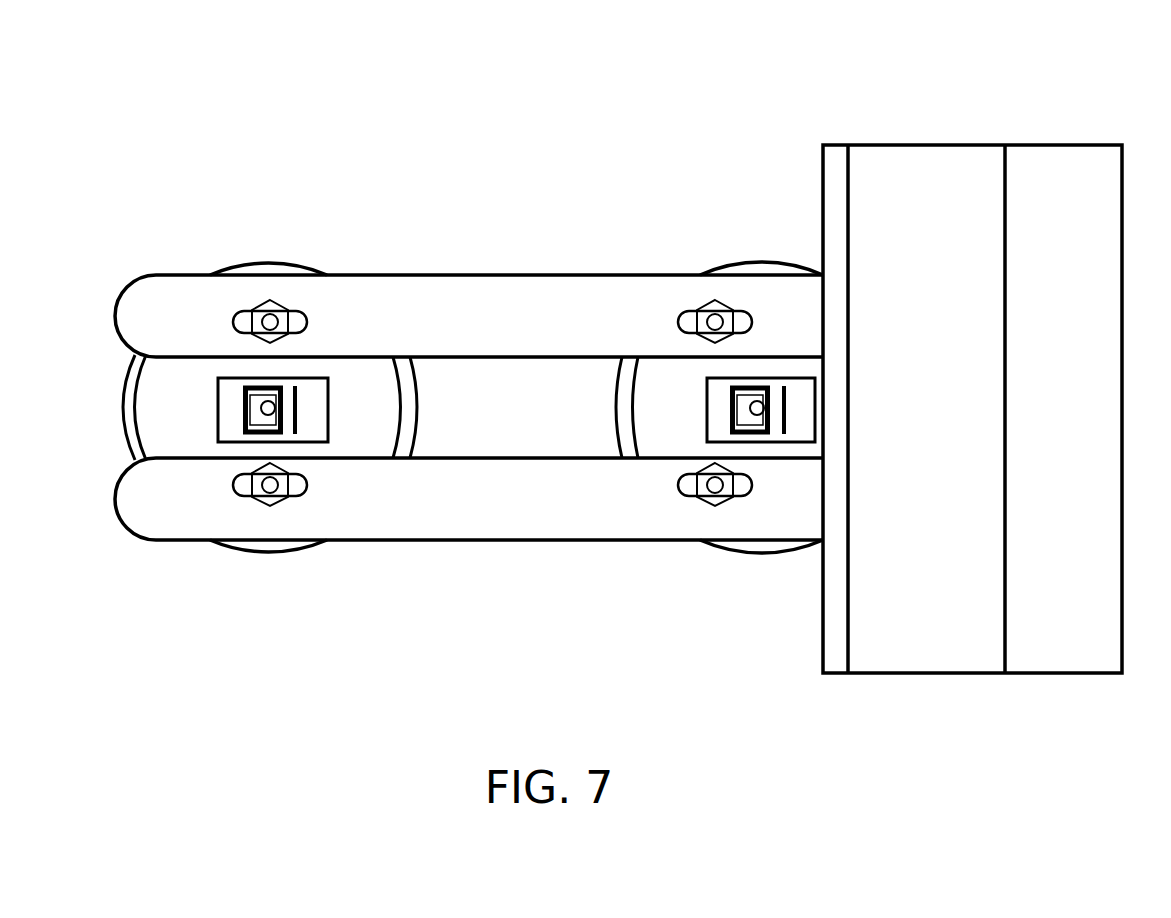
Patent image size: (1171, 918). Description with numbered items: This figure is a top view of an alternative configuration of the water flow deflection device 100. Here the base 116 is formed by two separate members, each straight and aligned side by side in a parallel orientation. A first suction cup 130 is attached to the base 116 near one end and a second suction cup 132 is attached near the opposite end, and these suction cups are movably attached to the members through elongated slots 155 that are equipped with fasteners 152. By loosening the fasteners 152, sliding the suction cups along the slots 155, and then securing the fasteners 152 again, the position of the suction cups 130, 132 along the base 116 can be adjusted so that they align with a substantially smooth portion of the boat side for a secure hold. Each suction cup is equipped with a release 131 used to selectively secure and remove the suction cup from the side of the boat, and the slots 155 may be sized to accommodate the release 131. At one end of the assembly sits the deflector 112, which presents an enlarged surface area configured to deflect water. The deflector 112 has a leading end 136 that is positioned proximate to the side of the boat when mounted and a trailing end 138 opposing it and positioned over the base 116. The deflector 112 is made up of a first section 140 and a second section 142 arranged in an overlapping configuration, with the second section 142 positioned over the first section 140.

The water flow deflection device 100 is at (218, 210).
The deflector 112 is at (928, 682).
The base 116 is at (500, 310).
The first suction cup 130 is at (700, 545).
The release 131 is at (222, 393).
The second suction cup 132 is at (222, 543).
The leading end 136 is at (1122, 145).
The trailing end 138 is at (830, 200).
The first section 140 is at (1045, 165).
The second section 142 is at (950, 165).
The fasteners 152 is at (272, 300).
The elongated slots 155 is at (246, 312).